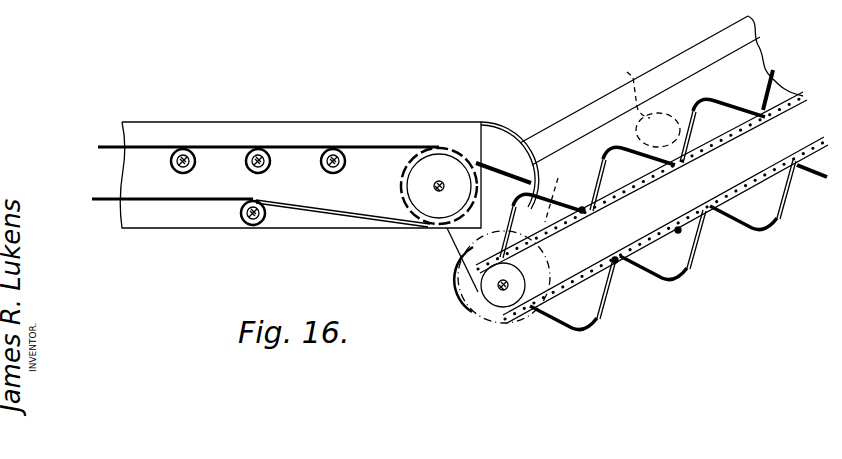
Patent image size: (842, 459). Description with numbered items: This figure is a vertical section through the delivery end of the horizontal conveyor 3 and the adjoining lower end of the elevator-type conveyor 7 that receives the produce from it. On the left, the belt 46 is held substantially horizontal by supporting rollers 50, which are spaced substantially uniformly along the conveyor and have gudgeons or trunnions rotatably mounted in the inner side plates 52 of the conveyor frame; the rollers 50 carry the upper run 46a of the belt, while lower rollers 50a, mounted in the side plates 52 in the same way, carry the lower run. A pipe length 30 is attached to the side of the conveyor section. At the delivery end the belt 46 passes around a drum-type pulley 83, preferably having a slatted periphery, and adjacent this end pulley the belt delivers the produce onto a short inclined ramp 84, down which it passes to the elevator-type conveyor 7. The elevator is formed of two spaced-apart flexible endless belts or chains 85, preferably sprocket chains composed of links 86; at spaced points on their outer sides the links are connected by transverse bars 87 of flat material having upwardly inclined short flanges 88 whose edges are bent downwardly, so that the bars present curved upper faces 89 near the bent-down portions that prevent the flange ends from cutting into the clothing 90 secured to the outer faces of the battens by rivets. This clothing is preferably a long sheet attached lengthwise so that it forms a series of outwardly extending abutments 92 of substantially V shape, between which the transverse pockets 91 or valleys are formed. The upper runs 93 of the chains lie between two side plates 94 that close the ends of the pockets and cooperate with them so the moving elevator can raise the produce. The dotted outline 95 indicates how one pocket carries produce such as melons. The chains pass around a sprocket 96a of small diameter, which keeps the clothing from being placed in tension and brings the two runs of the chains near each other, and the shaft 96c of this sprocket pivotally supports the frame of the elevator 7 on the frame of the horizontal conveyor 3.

The horizontal conveyor 3 is at (336, 121).
The pipe length 30 is at (372, 158).
The belt 46 is at (357, 218).
The upper run of the belt 46a is at (214, 146).
The supporting rollers 50 is at (172, 165).
The lower rollers 50a is at (241, 213).
The inner side plates 52 is at (159, 218).
The drum-type pulley 83 is at (427, 207).
The inclined ramp 84 is at (498, 168).
The flexible endless belts or chains 85 is at (679, 233).
The links 86 is at (645, 232).
The transverse bars 87 is at (787, 129).
The upwardly inclined short flanges 88 is at (625, 157).
The curved upper faces 89 is at (582, 207).
The clothing 90 is at (719, 91).
The pockets 91 is at (557, 145).
The abutments 92 is at (622, 138).
The upper runs 93 is at (720, 144).
The side plates 94 is at (767, 44).
The dotted outline of produce in pocket 95 is at (640, 102).
The sprocket 96a is at (512, 300).
The shaft 96c is at (483, 300).
The elevator-type conveyor 7 is at (786, 223).